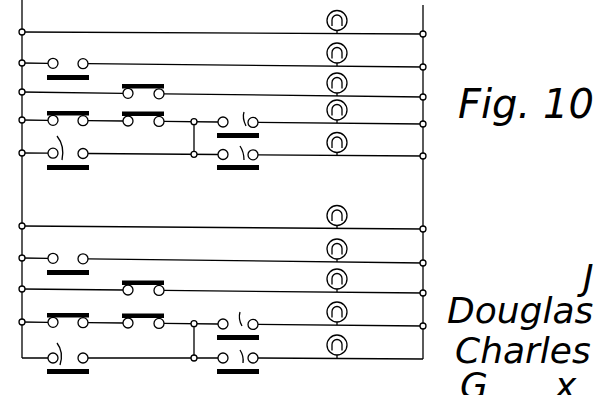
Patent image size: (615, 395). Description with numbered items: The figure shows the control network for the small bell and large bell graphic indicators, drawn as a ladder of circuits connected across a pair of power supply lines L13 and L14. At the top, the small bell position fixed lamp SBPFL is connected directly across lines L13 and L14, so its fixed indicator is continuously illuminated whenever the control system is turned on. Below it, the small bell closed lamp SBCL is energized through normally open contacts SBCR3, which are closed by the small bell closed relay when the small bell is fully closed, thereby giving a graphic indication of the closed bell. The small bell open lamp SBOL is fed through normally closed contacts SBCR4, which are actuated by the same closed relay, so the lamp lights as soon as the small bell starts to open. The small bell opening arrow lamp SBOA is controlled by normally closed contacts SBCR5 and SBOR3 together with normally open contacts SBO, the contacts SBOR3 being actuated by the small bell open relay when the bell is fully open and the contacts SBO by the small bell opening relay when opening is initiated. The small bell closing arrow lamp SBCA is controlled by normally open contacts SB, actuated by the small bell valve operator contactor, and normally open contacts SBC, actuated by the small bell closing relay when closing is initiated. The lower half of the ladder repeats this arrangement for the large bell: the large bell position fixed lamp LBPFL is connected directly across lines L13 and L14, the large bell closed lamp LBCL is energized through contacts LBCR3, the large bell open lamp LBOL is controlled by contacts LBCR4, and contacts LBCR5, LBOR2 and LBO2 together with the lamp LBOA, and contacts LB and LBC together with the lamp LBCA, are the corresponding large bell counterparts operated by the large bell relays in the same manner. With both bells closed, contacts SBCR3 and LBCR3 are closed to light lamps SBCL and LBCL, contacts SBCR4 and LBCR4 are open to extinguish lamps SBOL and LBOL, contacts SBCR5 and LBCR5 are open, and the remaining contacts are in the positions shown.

The power supply line L13 is at (22, 11).
The power supply line L14 is at (423, 13).
The small bell position fixed lamp SBPFL is at (347, 17).
The normally open contacts of small bell closed relay SBCR3 is at (73, 68).
The small bell closed lamp SBCL is at (347, 50).
The small bell open lamp SBOL is at (347, 80).
The normally closed contacts of small bell closed relay SBCR4 is at (142, 96).
The normally open contacts of small bell opening relay SBO is at (247, 120).
The small bell opening arrow lamp SBOA is at (347, 107).
The normally open contacts of small bell valve operator contactor SB is at (61, 150).
The normally closed contacts of small bell closed relay SBCR5 is at (70, 125).
The normally closed contacts of small bell open relay SBOR3 is at (142, 125).
The normally open contacts of small bell closing relay SBC is at (255, 152).
The small bell closing arrow lamp SBCA is at (347, 139).
The large bell position fixed lamp LBPFL is at (347, 212).
The large bell closed relay contacts LBCR3 is at (70, 266).
The large bell closed lamp LBCL is at (347, 246).
The large bell open lamp LBOL is at (347, 276).
The large bell closed relay contacts LBCR4 is at (144, 294).
The large boom open pushbutton 2 LBO2 is at (242, 319).
The large boom open auxiliary relay LBOA is at (347, 309).
The large boom pushbutton LB is at (61, 356).
The large bell closed relay contacts LBCR5 is at (66, 327).
The large boom open relay 2 contact LBOR2 is at (142, 327).
The large boom close pushbutton LBC is at (248, 356).
The large boom close auxiliary relay LBCA is at (347, 342).